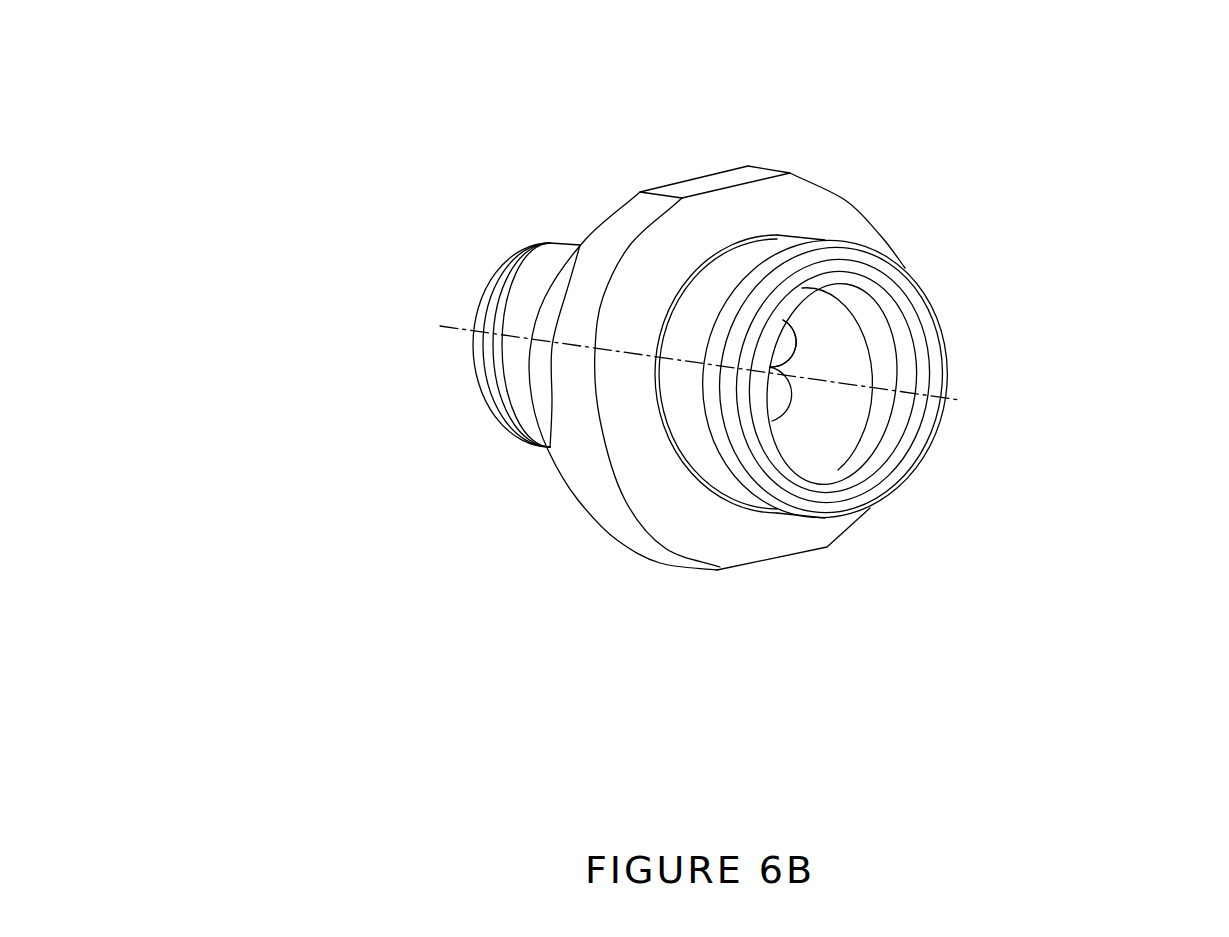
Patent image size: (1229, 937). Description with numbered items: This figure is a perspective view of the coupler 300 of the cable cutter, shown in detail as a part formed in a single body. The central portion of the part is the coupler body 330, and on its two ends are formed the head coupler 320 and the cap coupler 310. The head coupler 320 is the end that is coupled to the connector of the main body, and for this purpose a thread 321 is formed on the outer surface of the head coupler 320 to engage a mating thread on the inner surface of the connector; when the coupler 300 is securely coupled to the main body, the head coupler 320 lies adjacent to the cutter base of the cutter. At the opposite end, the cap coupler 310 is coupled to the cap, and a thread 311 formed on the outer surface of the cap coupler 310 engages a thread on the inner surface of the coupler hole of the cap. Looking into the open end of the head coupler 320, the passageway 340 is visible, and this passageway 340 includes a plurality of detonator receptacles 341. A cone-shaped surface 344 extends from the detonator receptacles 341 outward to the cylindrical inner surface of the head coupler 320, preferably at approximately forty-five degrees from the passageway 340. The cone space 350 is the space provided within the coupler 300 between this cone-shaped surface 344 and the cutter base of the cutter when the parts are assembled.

The coupler 300 is at (726, 291).
The cap coupler 310 is at (407, 371).
The thread 311 is at (386, 345).
The head coupler 320 is at (893, 323).
The thread 321 is at (876, 275).
The coupler body 330 is at (596, 449).
The passageway 340 is at (967, 343).
The detonator receptacles 341 is at (978, 477).
The cone-shaped surface 344 is at (1000, 381).
The cone space 350 is at (936, 423).